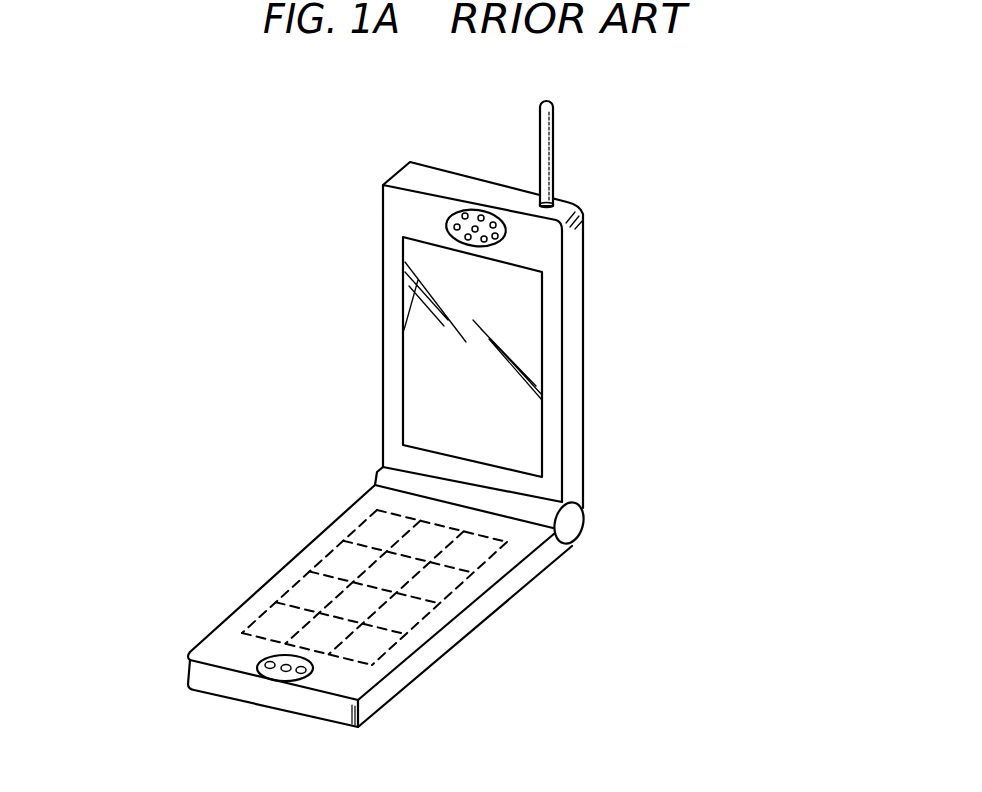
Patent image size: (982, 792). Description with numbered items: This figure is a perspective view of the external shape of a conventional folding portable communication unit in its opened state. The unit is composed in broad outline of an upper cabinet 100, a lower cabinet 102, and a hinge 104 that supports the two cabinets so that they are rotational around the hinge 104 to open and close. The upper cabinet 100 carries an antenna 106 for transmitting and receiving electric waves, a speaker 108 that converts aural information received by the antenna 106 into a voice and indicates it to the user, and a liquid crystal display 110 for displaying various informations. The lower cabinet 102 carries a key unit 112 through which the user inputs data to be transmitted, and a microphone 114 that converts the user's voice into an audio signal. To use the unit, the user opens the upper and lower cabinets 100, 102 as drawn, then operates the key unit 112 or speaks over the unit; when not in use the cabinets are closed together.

The upper cabinet 100 is at (575, 362).
The lower cabinet 102 is at (458, 632).
The hinge 104 is at (572, 528).
The antenna 106 is at (556, 173).
The speaker 108 is at (477, 208).
The liquid crystal display 110 is at (420, 369).
The key unit 112 is at (326, 552).
The microphone 114 is at (262, 662).